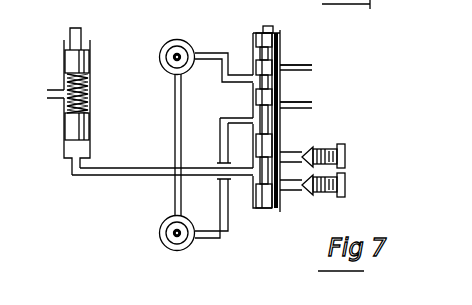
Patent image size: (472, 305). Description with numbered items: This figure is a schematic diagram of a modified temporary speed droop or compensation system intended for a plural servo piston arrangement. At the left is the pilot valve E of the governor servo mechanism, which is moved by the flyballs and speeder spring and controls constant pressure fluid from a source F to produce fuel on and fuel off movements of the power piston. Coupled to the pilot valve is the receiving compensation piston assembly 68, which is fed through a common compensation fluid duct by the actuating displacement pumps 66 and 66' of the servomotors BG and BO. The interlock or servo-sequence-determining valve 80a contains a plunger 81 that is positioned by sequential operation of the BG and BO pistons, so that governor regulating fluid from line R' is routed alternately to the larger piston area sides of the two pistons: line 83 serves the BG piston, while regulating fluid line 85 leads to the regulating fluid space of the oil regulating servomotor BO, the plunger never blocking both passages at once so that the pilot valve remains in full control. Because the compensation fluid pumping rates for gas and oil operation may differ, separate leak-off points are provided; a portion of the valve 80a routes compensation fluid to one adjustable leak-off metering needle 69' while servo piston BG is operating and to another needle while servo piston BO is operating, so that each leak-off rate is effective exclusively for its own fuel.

The pilot valve E is at (64, 33).
The receiving compensation piston assembly 68 is at (93, 104).
The actuating displacement pump 66 is at (176, 40).
The actuating displacement pump 66' is at (153, 234).
The servo piston BG is at (158, 71).
The servo piston BO is at (157, 219).
The line 83 is at (219, 53).
The regulating fluid line 85 is at (220, 197).
The interlock or servo-sequence-determining valve 80a is at (291, 52).
The plunger 81 is at (280, 33).
The source F is at (300, 65).
The line R' is at (303, 92).
The leak-off metering needle 69' is at (333, 180).